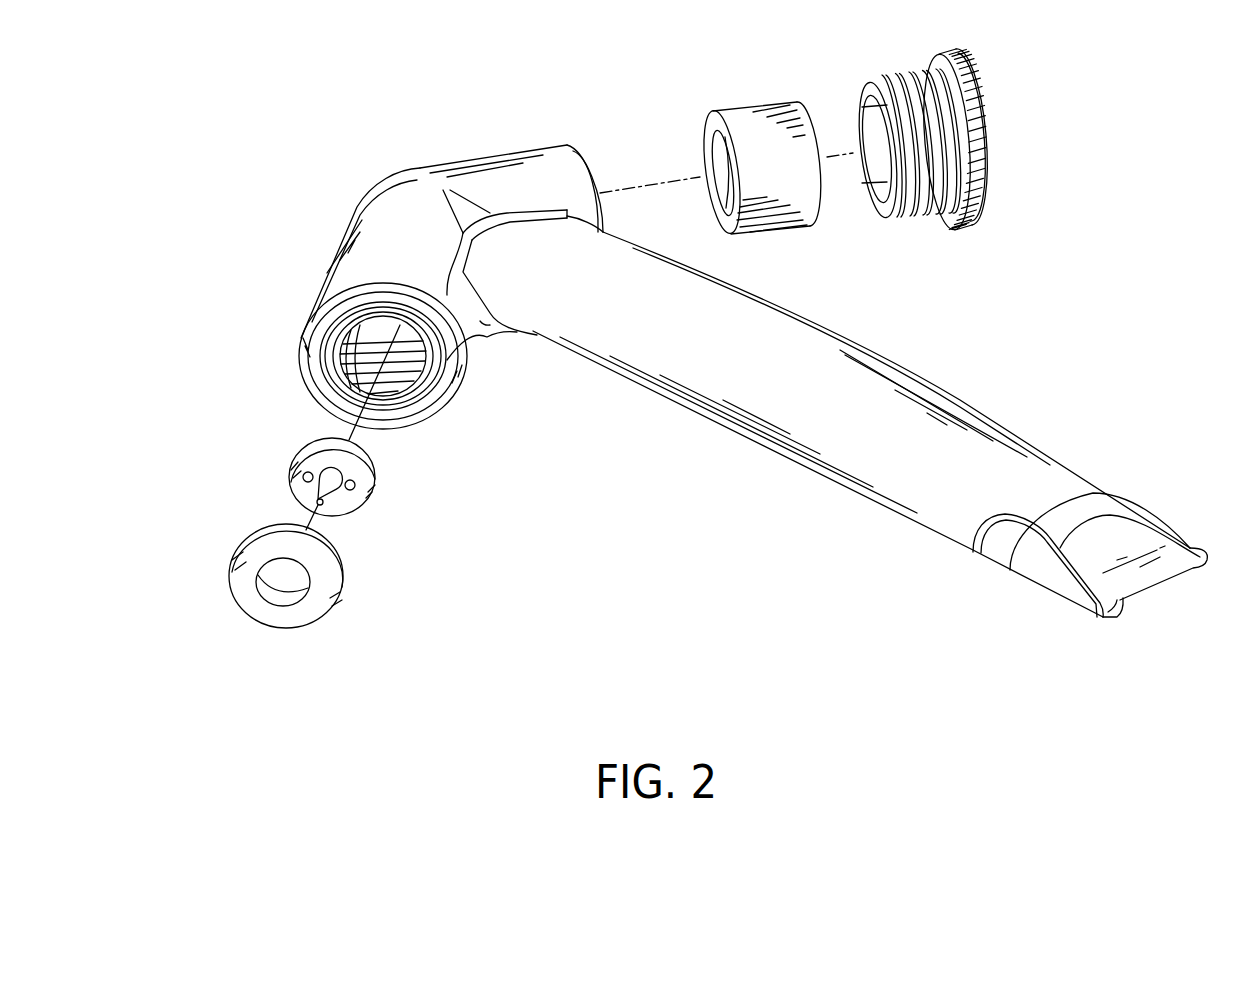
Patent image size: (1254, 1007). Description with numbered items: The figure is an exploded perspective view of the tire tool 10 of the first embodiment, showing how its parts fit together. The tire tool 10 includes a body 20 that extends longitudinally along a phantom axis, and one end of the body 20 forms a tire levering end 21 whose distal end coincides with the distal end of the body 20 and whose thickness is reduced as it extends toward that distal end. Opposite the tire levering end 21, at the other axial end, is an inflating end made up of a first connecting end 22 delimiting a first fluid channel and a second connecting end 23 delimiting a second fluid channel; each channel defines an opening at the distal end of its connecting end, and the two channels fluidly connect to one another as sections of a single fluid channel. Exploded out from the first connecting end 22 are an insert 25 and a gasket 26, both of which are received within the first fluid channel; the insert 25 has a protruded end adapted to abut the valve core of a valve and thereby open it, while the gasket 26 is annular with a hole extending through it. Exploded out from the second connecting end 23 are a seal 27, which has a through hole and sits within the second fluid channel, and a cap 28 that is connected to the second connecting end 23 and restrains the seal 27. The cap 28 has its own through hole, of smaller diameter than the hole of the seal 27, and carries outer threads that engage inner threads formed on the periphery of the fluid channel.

The tire tool 10 is at (723, 407).
The body 20 is at (923, 344).
The tire levering end 21 is at (1138, 577).
The first connecting end 22 is at (344, 355).
The second connecting end 23 is at (590, 173).
The insert 25 is at (367, 500).
The gasket 26 is at (327, 587).
The seal 27 is at (786, 217).
The cap 28 is at (973, 192).